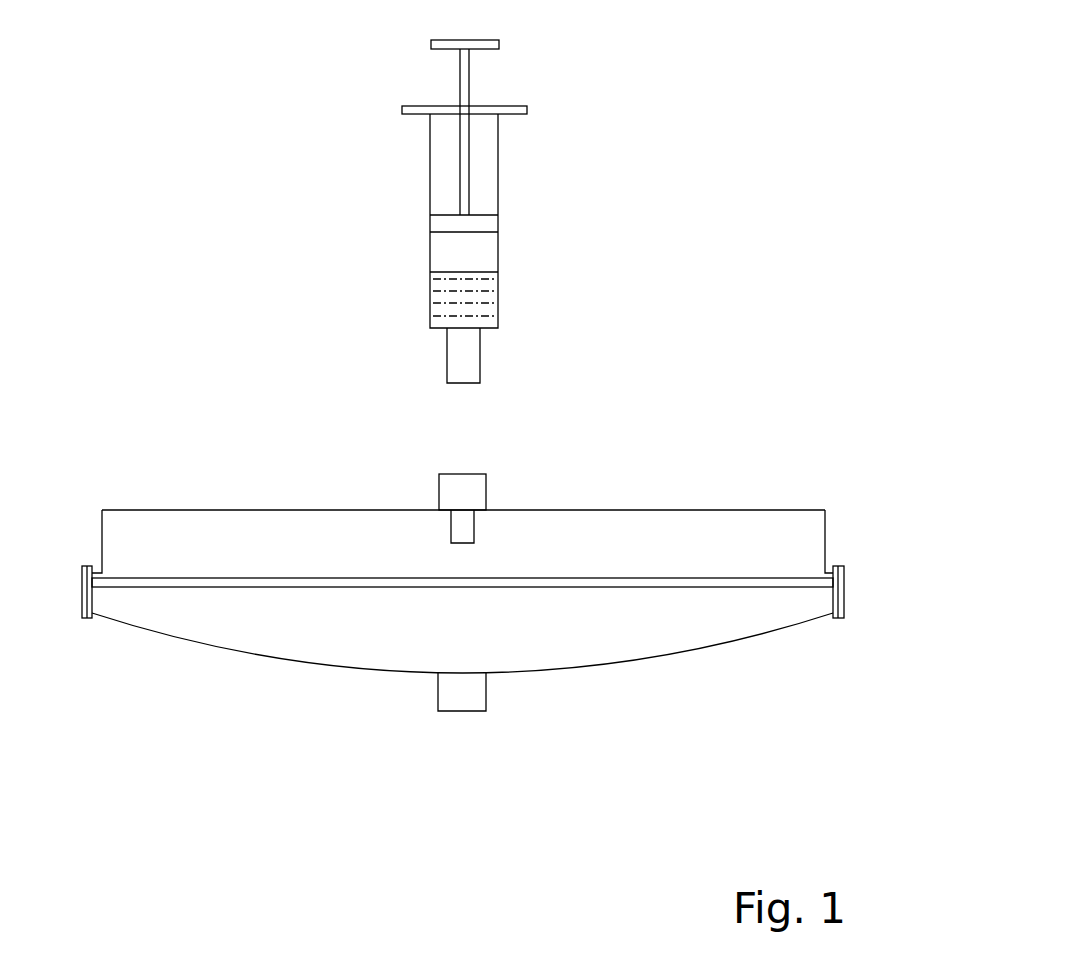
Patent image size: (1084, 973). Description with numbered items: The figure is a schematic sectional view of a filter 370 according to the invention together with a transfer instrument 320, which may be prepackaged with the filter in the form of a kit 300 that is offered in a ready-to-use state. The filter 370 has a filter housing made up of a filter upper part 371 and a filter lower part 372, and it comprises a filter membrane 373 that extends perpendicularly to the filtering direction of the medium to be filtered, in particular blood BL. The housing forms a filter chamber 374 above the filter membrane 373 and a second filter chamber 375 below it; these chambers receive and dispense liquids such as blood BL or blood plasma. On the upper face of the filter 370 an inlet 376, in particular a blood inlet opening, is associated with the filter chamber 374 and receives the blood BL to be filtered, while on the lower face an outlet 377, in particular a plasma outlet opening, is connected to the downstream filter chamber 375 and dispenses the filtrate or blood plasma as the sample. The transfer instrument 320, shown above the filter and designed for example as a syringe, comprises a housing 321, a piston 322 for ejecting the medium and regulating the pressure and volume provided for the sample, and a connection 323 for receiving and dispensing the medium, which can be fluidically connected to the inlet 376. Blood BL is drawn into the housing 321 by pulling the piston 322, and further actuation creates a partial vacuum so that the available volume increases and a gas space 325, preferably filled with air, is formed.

The kit 300 is at (176, 249).
The transfer instrument 320 is at (596, 86).
The housing 321 is at (498, 174).
The piston 322 is at (488, 225).
The connection 323 is at (481, 364).
The gas space 325 is at (443, 251).
The blood BL is at (489, 293).
The filter 370 is at (730, 494).
The filter upper part 371 is at (826, 541).
The filter lower part 372 is at (740, 640).
The filter membrane 373 is at (623, 582).
The filter chamber 374 is at (247, 527).
The filter chamber 375 is at (210, 613).
The inlet 376 is at (463, 478).
The outlet 377 is at (457, 700).